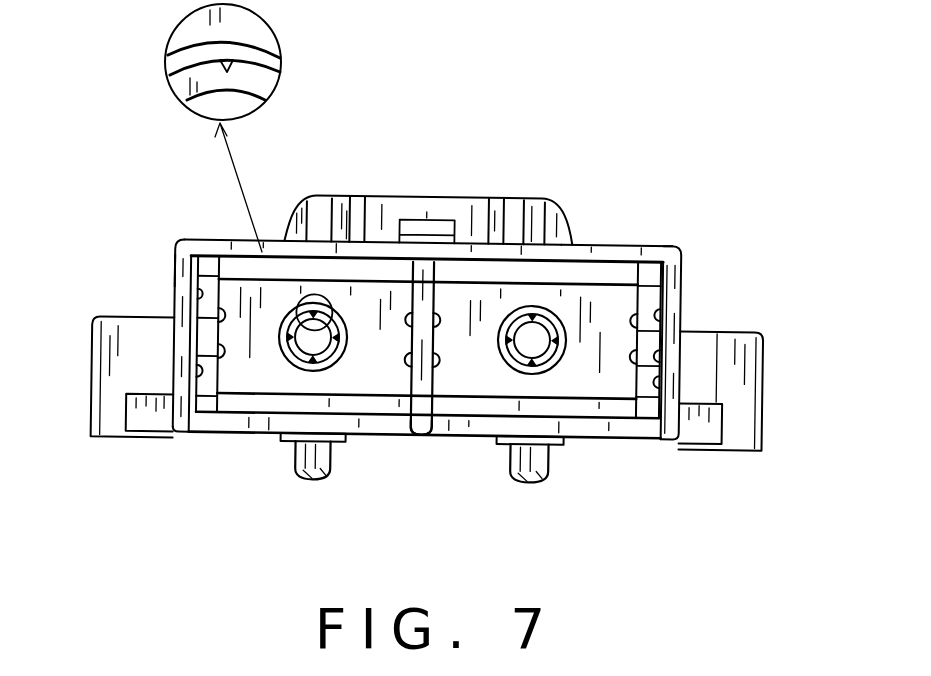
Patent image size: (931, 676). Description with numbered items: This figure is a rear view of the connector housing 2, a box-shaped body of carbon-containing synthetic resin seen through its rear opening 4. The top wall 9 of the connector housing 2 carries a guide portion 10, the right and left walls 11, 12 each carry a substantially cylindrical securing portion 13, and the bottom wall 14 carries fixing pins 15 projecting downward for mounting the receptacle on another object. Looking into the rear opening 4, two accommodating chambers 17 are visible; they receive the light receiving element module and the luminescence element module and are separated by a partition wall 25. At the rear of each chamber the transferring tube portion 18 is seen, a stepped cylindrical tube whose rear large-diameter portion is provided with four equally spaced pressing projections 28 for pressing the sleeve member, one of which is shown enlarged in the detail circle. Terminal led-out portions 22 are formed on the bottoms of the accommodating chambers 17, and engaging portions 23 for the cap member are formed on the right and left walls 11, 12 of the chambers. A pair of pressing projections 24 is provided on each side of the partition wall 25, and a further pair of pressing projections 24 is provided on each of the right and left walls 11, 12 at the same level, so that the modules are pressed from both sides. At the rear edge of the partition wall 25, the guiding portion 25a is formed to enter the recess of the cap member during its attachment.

The connector housing 2 is at (545, 180).
The rear opening 4 is at (185, 241).
The top wall 9 is at (620, 244).
The guide portion 10 is at (407, 203).
The right wall 11 is at (683, 265).
The left wall 12 is at (174, 267).
The securing portion 13 is at (107, 372).
The bottom wall 14 is at (610, 383).
The fixing pin 15 is at (314, 470).
The accommodating chamber 17 is at (237, 432).
The transferring tube portion 18 is at (190, 43).
The terminal led-out portion 22 is at (256, 428).
The engaging portion 23 is at (202, 371).
The pressing projection 24 is at (300, 303).
The partition wall 25 is at (430, 385).
The guiding portion 25a is at (423, 405).
The pressing projection 28 is at (282, 64).